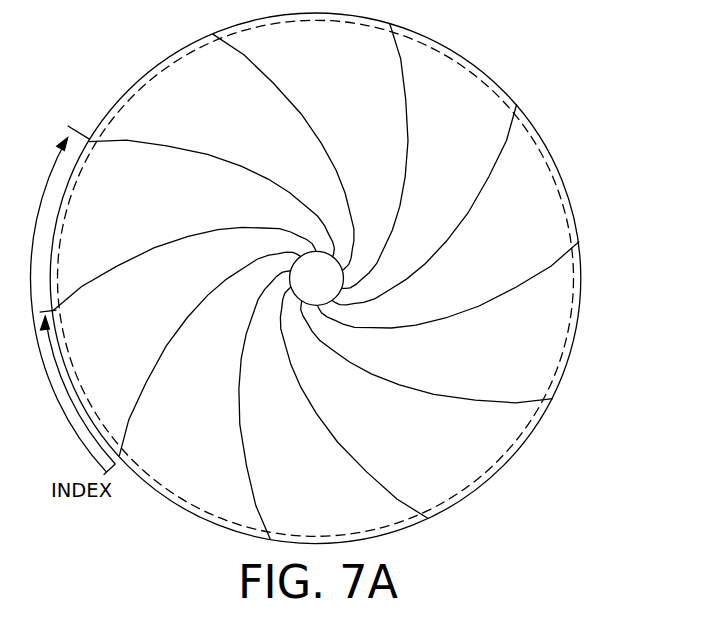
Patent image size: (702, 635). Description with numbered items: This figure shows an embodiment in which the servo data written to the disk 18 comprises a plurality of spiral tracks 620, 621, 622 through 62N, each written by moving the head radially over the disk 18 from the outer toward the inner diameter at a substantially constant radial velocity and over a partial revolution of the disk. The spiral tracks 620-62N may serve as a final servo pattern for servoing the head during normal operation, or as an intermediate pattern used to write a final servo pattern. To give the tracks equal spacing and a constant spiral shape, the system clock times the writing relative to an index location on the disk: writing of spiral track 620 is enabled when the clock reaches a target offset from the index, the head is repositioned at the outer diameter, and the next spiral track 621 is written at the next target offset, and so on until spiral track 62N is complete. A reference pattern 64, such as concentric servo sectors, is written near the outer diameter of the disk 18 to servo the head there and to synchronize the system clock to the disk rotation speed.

The disk 18 is at (502, 75).
The reference pattern 64 is at (563, 197).
The spiral track 620 is at (141, 257).
The spiral track 621 is at (193, 147).
The spiral track 622 is at (289, 107).
The spiral track 62N is at (158, 360).